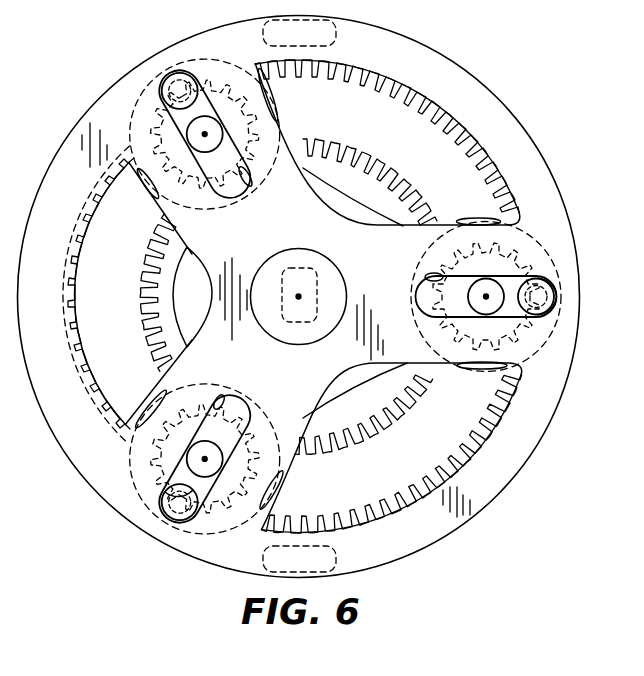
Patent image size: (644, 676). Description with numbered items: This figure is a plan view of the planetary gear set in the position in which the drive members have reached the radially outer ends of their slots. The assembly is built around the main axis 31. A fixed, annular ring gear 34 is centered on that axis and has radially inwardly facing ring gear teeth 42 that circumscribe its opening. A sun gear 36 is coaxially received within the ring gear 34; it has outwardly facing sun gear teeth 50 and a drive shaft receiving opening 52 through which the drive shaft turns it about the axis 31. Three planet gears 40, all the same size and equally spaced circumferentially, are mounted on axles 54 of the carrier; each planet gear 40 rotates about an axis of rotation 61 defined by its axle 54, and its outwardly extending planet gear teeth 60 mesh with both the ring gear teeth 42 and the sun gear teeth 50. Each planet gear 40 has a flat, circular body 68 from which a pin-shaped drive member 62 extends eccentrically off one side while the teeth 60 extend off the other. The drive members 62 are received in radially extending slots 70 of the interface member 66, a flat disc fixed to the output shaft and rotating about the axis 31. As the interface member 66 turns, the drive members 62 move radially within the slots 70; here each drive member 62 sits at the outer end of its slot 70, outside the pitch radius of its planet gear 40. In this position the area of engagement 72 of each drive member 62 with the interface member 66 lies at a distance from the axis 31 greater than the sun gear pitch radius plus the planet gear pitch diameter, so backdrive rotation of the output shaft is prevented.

The main axis 31 is at (298, 295).
The ring gear 34 is at (417, 93).
The sun gear 36 is at (350, 197).
The planet gear 40 is at (173, 143).
The ring gear teeth 42 is at (373, 88).
The sun gear teeth 50 is at (395, 173).
The drive shaft receiving opening 52 is at (316, 297).
The axle 54 is at (500, 289).
The planet gear teeth 60 is at (274, 118).
The axis of rotation of planet gear 61 is at (205, 133).
The drive member 62 is at (178, 82).
The interface member 66 is at (300, 395).
The body of planet gear 68 is at (274, 96).
The slot 70 is at (245, 182).
The area of engagement 72 is at (540, 277).